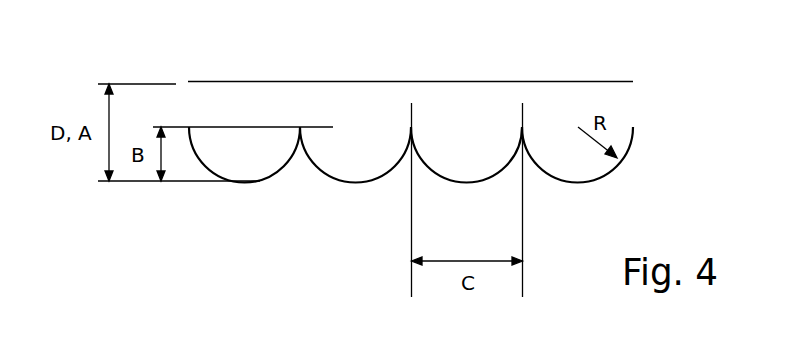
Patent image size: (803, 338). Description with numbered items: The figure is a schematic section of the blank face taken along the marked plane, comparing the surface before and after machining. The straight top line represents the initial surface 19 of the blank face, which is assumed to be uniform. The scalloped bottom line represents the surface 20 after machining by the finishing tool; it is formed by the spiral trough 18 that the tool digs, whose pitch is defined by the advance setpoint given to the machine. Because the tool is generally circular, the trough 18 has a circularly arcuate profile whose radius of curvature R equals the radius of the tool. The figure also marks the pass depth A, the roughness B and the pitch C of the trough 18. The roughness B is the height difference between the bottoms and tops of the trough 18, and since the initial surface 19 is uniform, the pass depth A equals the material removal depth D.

The spiral trough 18 is at (367, 98).
The initial surface 19 is at (312, 74).
The surface after machining 20 is at (428, 146).